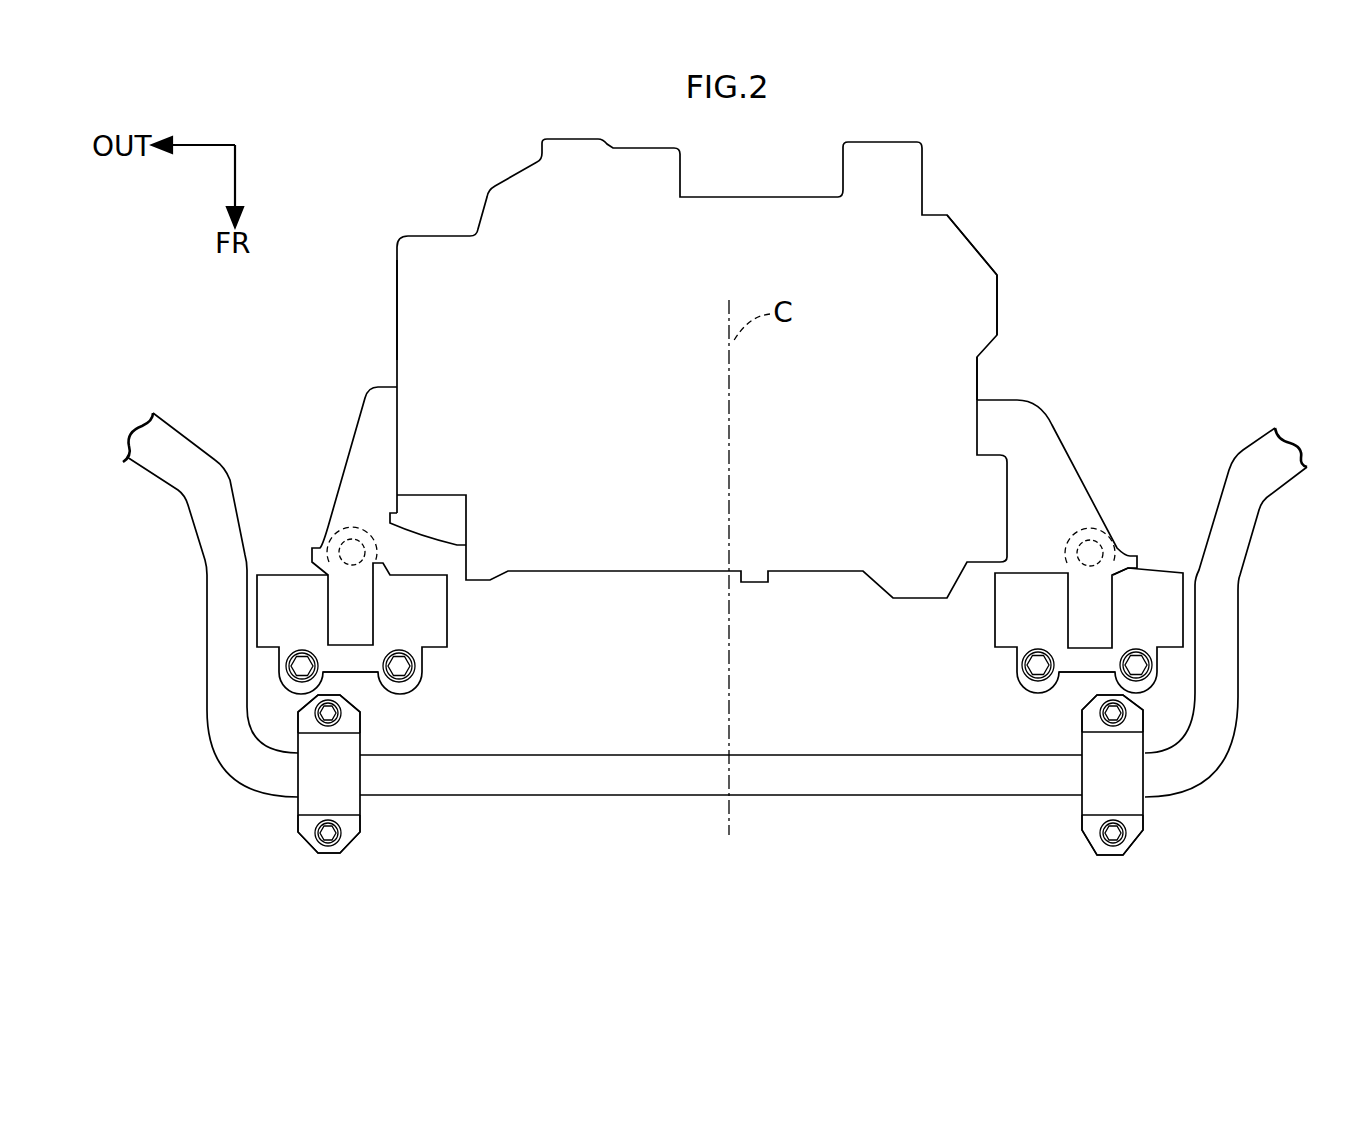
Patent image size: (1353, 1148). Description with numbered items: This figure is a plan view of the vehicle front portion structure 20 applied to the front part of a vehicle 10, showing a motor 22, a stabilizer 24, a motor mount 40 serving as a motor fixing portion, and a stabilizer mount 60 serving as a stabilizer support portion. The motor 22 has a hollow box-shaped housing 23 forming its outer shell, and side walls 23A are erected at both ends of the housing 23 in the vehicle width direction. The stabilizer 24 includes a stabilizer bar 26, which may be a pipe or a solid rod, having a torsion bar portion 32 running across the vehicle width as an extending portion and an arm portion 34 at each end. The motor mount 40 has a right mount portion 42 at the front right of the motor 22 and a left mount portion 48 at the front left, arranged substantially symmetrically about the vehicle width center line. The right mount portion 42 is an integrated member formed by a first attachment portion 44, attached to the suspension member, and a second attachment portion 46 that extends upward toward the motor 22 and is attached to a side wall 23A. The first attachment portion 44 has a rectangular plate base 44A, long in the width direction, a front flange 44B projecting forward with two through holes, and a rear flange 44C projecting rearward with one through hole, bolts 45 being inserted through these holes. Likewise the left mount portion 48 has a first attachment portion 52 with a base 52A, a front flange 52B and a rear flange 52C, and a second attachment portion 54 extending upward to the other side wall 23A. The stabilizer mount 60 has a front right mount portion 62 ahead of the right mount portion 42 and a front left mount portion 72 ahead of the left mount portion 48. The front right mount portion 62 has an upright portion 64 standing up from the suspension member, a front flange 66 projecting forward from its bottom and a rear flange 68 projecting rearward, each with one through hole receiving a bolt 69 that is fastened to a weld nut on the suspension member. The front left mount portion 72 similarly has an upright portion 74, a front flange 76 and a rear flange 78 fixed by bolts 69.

The vehicle 10 is at (1190, 188).
The vehicle front portion structure 20 is at (1090, 215).
The motor 22 is at (975, 222).
The housing 23 is at (1005, 299).
The side wall 23A is at (395, 310).
The stabilizer 24 is at (778, 815).
The stabilizer bar 26 is at (858, 797).
The torsion bar portion 32 is at (640, 780).
The arm portion 34 is at (213, 625).
The motor mount 40 is at (1121, 441).
The right mount portion 42 is at (312, 531).
The first attachment portion 44 is at (452, 630).
The base 44A is at (432, 604).
The front flange 44B is at (347, 670).
The rear flange 44C is at (345, 527).
The bolt 45 is at (355, 538).
The second attachment portion 46 is at (345, 430).
The left mount portion 48 is at (1118, 522).
The first attachment portion 52 is at (990, 632).
The base 52A is at (992, 605).
The front flange 52B is at (1082, 670).
The rear flange 52C is at (1075, 537).
The second attachment portion 54 is at (1070, 452).
The stabilizer mount 60 is at (1081, 855).
The front right mount portion 62 is at (292, 806).
The upright portion 64 is at (336, 790).
The front flange 66 is at (350, 836).
The rear flange 68 is at (355, 722).
The bolt 69 is at (326, 712).
The front left mount portion 72 is at (1154, 819).
The upright portion 74 is at (1103, 795).
The front flange 76 is at (1150, 836).
The rear flange 78 is at (1135, 720).